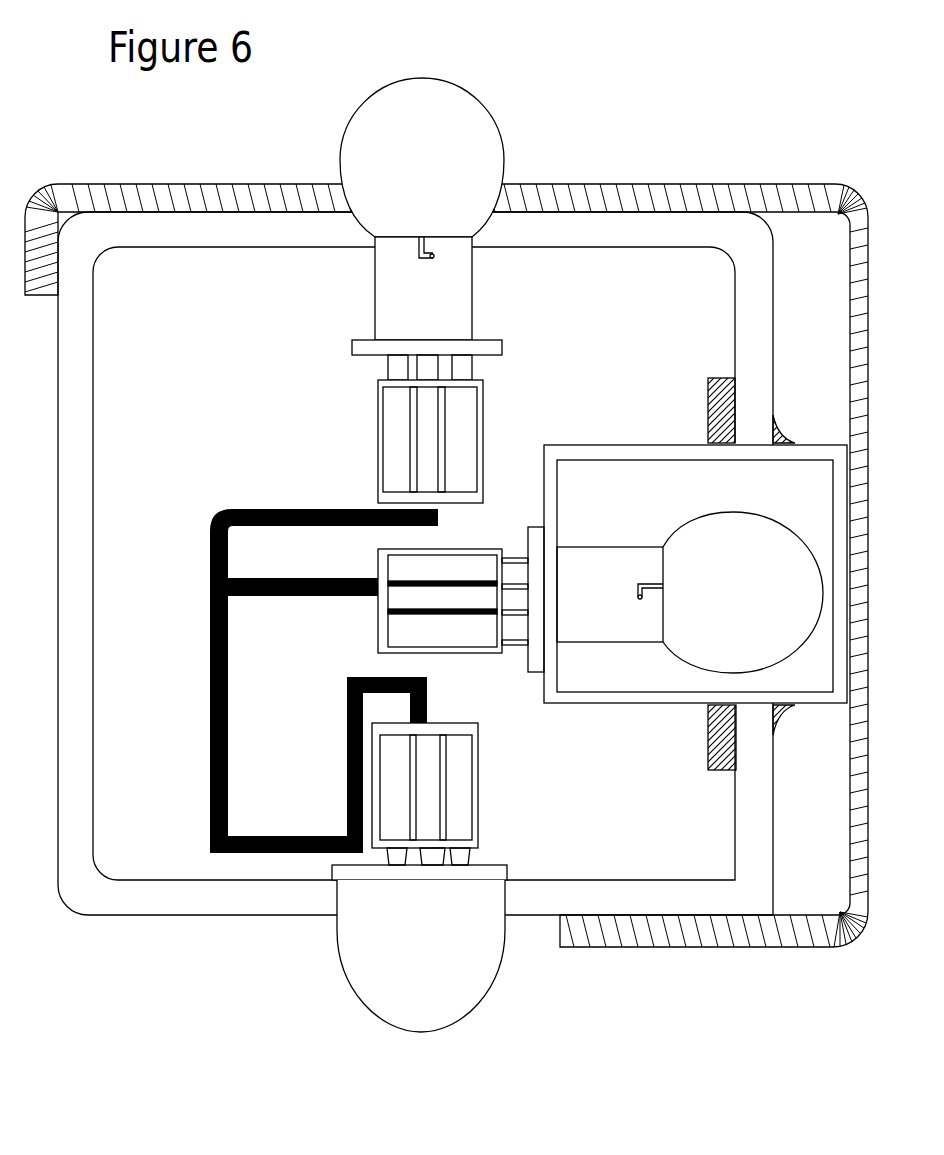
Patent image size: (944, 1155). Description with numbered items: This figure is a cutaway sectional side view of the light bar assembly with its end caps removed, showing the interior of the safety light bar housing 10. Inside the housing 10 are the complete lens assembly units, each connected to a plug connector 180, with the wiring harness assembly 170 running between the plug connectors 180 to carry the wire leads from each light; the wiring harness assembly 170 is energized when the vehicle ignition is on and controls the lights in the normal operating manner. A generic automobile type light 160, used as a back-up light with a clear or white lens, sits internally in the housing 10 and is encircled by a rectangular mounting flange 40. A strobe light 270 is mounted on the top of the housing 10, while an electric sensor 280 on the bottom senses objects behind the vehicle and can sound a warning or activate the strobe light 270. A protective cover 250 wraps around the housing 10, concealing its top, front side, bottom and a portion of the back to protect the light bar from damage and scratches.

The safety light bar housing 10 is at (95, 350).
The rectangular mounting flange 40 is at (707, 742).
The generic automobile type light 160 is at (688, 522).
The wiring harness assembly 170 is at (232, 715).
The plug connectors 180 is at (490, 415).
The protective cover 250 is at (714, 948).
The strobe lights 270 is at (415, 78).
The electric sensors 280 is at (400, 1036).